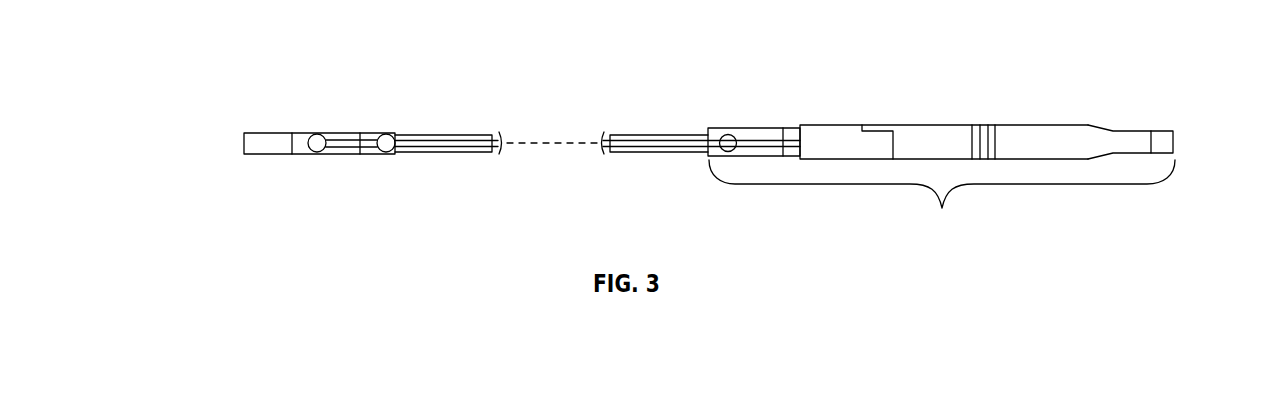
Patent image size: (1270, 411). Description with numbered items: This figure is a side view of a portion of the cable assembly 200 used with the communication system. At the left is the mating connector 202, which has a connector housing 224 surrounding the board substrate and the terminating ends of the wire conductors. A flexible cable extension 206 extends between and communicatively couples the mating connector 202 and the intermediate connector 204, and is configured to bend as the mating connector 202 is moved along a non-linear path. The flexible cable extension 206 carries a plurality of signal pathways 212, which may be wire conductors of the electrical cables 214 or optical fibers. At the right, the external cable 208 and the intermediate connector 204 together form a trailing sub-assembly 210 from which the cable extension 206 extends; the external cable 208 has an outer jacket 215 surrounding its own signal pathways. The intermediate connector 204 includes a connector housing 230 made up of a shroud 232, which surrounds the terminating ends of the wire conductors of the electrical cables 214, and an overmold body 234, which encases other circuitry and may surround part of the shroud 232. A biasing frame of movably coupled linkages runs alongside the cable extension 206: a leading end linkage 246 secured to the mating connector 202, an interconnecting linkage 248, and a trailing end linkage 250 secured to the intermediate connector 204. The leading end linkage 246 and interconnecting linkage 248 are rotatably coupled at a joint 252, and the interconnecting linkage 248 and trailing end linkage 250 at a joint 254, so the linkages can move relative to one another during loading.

The cable assembly 200 is at (1093, 35).
The mating connector 202 is at (293, 191).
The intermediate connector 204 is at (844, 200).
The flexible cable extension 206 is at (693, 180).
The external cable 208 is at (1124, 114).
The trailing sub-assembly 210 is at (942, 197).
The signal pathways 212 is at (643, 169).
The electrical cables 214 is at (638, 135).
The outer jacket 215 is at (1062, 125).
The connector housing 224 is at (280, 133).
The connector housing 230 is at (876, 92).
The shroud 232 is at (757, 137).
The overmold body 234 is at (933, 125).
The leading end linkage 246 is at (350, 143).
The interconnecting linkage 248 is at (472, 147).
The trailing end linkage 250 is at (785, 137).
The joint 252 is at (386, 152).
The joint 254 is at (728, 136).